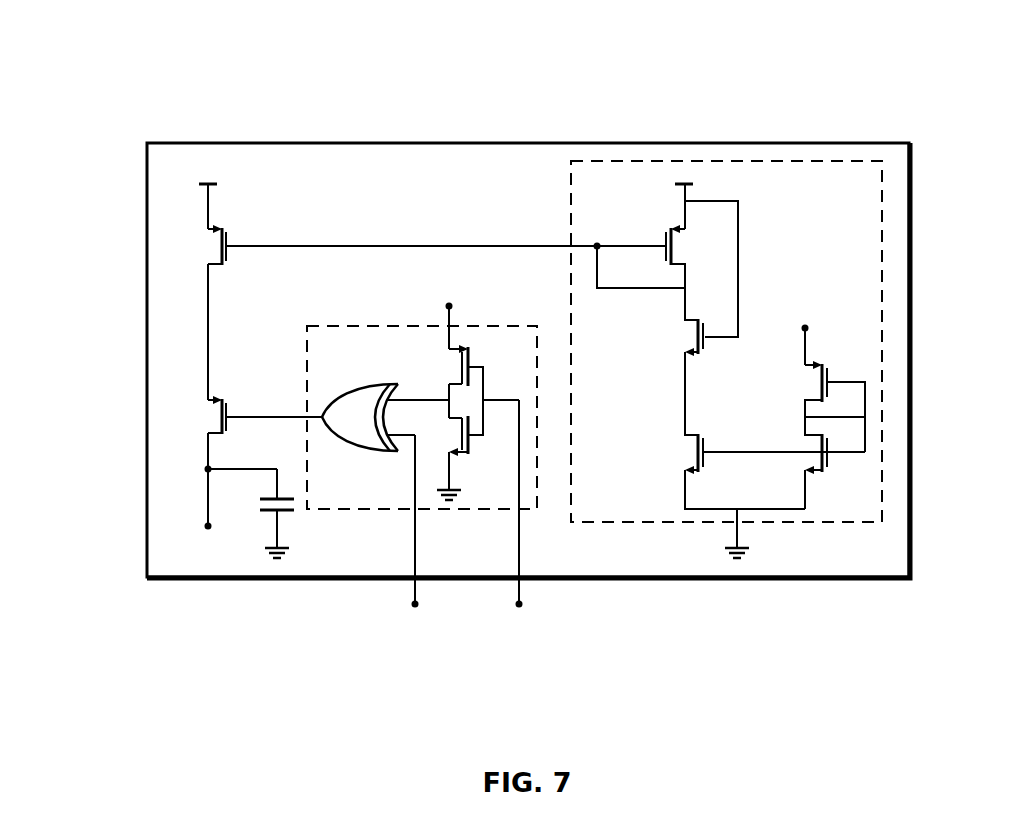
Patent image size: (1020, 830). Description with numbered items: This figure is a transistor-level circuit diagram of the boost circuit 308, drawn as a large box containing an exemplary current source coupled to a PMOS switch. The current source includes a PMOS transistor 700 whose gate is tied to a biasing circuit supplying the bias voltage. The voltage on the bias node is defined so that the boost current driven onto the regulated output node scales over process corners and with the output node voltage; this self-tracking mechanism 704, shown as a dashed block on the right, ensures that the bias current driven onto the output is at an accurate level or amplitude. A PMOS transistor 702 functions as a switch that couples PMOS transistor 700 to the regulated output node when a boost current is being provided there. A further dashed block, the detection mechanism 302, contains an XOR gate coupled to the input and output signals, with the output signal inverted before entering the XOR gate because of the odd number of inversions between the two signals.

The PMOS transistor 700 is at (191, 249).
The PMOS transistor 702 is at (191, 427).
The self-tracking mechanism 704 is at (578, 158).
The detection mechanism 302 is at (528, 513).
The boost circuit 308 is at (783, 590).